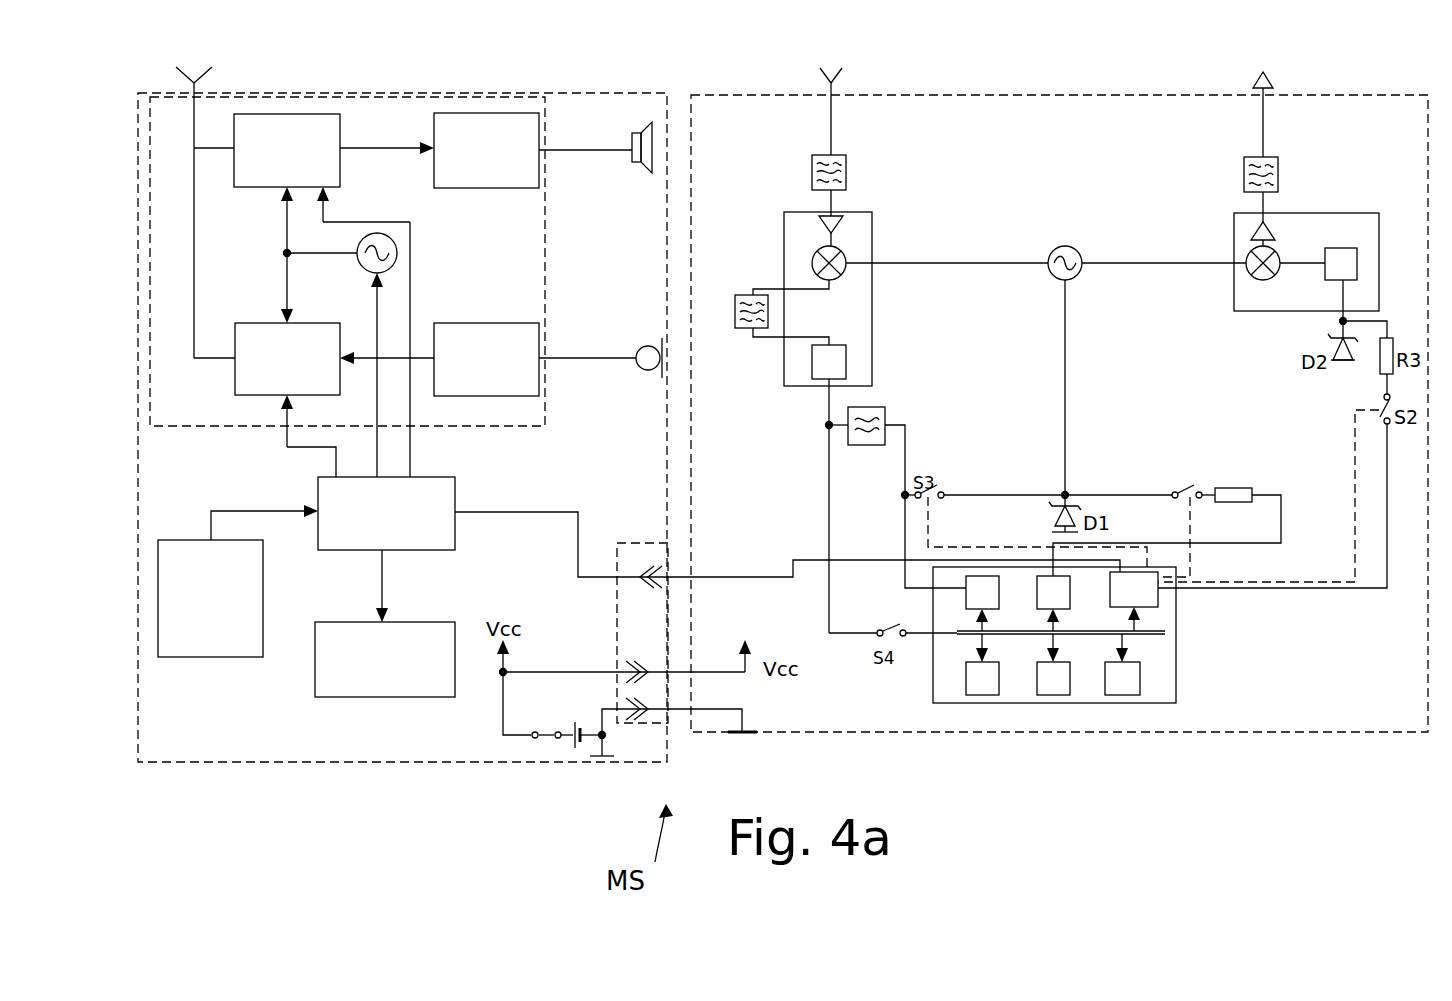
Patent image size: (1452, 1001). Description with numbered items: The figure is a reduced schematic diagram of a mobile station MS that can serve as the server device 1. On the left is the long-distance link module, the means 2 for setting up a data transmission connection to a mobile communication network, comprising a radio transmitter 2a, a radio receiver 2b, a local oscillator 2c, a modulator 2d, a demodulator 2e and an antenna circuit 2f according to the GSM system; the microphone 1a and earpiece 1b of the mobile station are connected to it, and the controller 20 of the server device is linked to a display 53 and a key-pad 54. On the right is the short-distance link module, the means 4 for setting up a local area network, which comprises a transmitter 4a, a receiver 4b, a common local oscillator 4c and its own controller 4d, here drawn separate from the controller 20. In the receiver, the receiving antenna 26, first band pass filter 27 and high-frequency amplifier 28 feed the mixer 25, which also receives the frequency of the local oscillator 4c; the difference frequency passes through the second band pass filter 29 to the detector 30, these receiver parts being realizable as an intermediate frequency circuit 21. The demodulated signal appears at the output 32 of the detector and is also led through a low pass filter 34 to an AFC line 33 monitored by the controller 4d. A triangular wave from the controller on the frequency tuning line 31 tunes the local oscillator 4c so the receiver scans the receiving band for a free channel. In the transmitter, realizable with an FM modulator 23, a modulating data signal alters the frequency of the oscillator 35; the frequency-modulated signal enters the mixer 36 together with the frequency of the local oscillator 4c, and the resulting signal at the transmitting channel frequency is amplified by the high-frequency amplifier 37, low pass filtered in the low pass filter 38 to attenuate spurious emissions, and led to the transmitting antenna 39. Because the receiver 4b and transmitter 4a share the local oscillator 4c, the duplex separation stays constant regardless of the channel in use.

The server device 1 is at (280, 762).
The microphone 1a is at (650, 372).
The earpiece 1b is at (640, 165).
The means for setting up a data transmission connection 2 is at (190, 428).
The radio transmitter 2a is at (235, 380).
The radio receiver 2b is at (252, 187).
The local oscillator 2c is at (397, 250).
The modulator 2d is at (515, 323).
The demodulator 2e is at (410, 218).
The antenna circuit 2f is at (200, 80).
The controller of the server device 20 is at (455, 540).
The display 53 is at (386, 697).
The key-pad 54 is at (203, 657).
The means for setting up a local area network 4 is at (1008, 763).
The transmitter 4a is at (1243, 222).
The receiver 4b is at (882, 294).
The local oscillator 4c is at (1060, 246).
The controller of the short-distance link module 4d is at (1176, 673).
The intermediate frequency circuit 21 is at (872, 308).
The FM modulator 23 is at (1234, 292).
The mixer 25 is at (812, 258).
The receiving antenna 26 is at (836, 82).
The first band pass filter 27 is at (846, 172).
The high-frequency amplifier 28 is at (785, 222).
The second band pass filter 29 is at (740, 328).
The detector 30 is at (846, 360).
The frequency tuning line 31 is at (1283, 520).
The output of the detector 32 is at (829, 495).
The AFC line 33 is at (1012, 493).
The low pass filter 34 is at (885, 407).
The oscillator 35 is at (1357, 262).
The mixer 36 is at (1246, 258).
The high-frequency amplifier 37 is at (1251, 232).
The low pass filter 38 is at (1278, 170).
The transmitting antenna 39 is at (1272, 88).